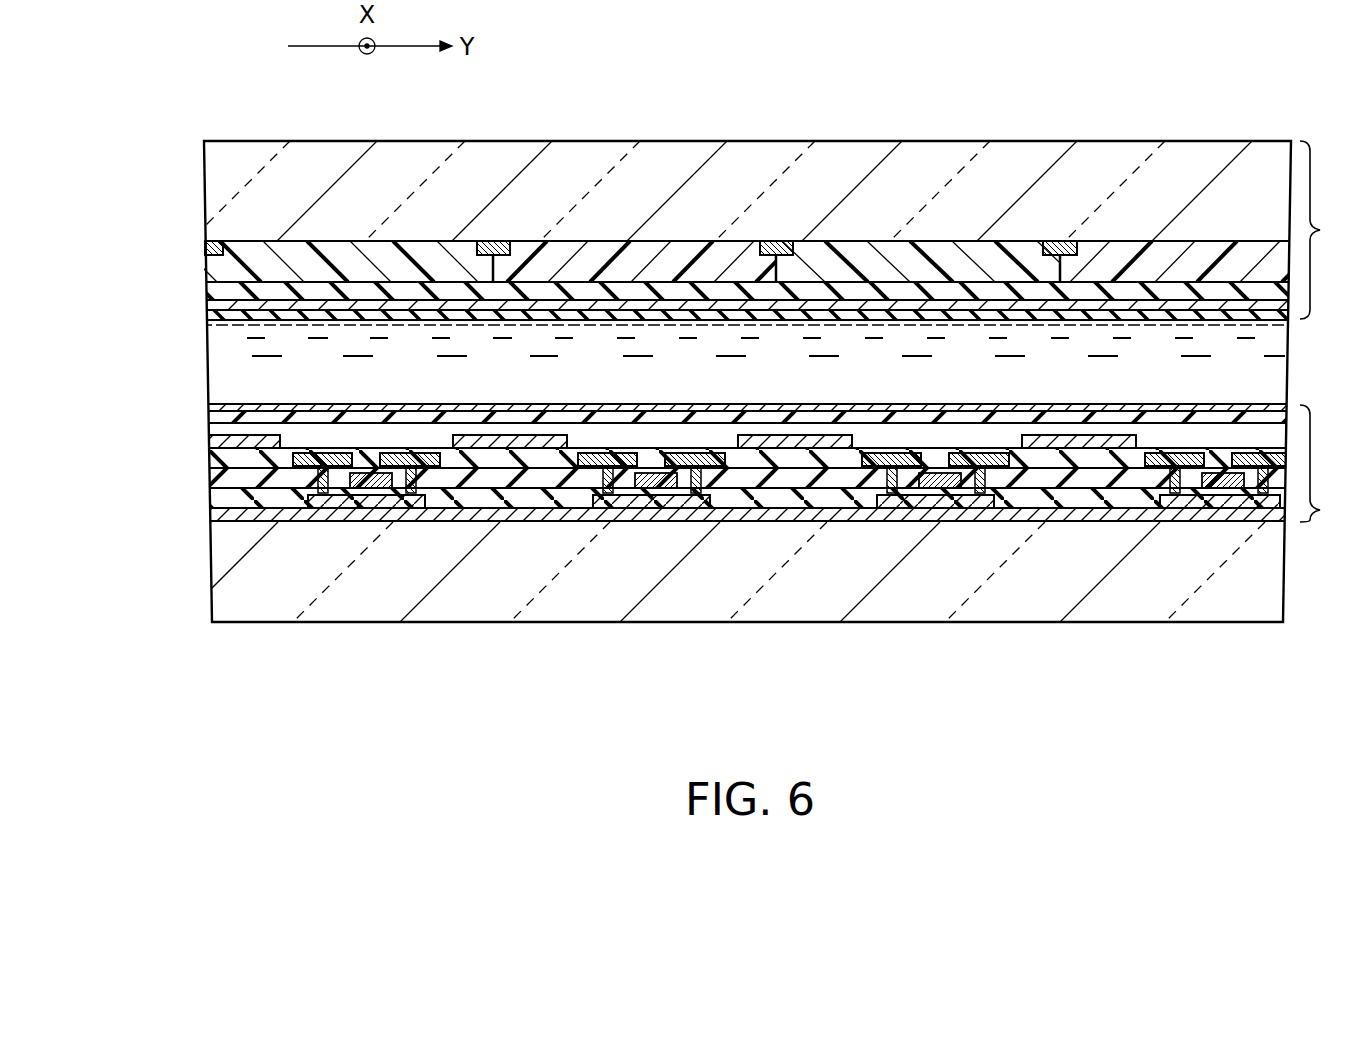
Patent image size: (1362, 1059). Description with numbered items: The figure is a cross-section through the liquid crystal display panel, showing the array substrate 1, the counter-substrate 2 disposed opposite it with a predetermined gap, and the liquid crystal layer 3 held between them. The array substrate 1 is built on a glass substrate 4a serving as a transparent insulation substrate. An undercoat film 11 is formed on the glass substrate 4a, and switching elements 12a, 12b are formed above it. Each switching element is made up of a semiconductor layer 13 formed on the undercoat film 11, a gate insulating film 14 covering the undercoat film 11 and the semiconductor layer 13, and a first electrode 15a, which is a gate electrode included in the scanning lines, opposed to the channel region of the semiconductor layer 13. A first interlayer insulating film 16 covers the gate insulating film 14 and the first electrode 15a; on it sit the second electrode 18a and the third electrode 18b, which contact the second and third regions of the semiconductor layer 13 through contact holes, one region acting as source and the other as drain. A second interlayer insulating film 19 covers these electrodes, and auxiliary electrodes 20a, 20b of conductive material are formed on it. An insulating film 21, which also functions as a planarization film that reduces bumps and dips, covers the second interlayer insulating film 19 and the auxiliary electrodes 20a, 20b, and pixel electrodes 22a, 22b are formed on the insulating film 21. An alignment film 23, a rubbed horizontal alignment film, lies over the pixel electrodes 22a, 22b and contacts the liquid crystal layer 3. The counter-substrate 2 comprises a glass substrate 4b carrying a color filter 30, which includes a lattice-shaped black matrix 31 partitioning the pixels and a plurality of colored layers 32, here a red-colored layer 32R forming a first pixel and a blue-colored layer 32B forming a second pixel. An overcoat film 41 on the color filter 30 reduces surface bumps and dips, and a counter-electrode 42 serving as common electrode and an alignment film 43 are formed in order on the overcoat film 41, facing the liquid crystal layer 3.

The array substrate 1 is at (772, 513).
The counter-substrate 2 is at (772, 231).
The liquid crystal layer 3 is at (1273, 352).
The glass substrate 4a is at (216, 570).
The glass substrate 4b is at (215, 190).
The undercoat film 11 is at (212, 513).
The switching element 12a is at (622, 538).
The switching element 12b is at (335, 538).
The semiconductor layer 13 is at (395, 508).
The gate insulating film 14 is at (212, 495).
The first electrode 15a is at (366, 488).
The first interlayer insulating film 16 is at (212, 475).
The second electrode 18a is at (305, 467).
The third electrode 18b is at (430, 467).
The second interlayer insulating film 19 is at (210, 455).
The auxiliary electrode 20a is at (500, 450).
The auxiliary electrode 20b is at (812, 450).
The insulating film 21 is at (208, 418).
The pixel electrode 22a is at (656, 412).
The pixel electrode 22b is at (396, 412).
The alignment film 23 is at (206, 406).
The color filter 30 is at (714, 190).
The black matrix 31 is at (493, 242).
The colored layer 32 is at (749, 190).
The blue-colored layer 32B is at (352, 257).
The red-colored layer 32R is at (640, 262).
The overcoat film 41 is at (205, 290).
The counter-electrode 42 is at (205, 305).
The alignment film 43 is at (212, 316).